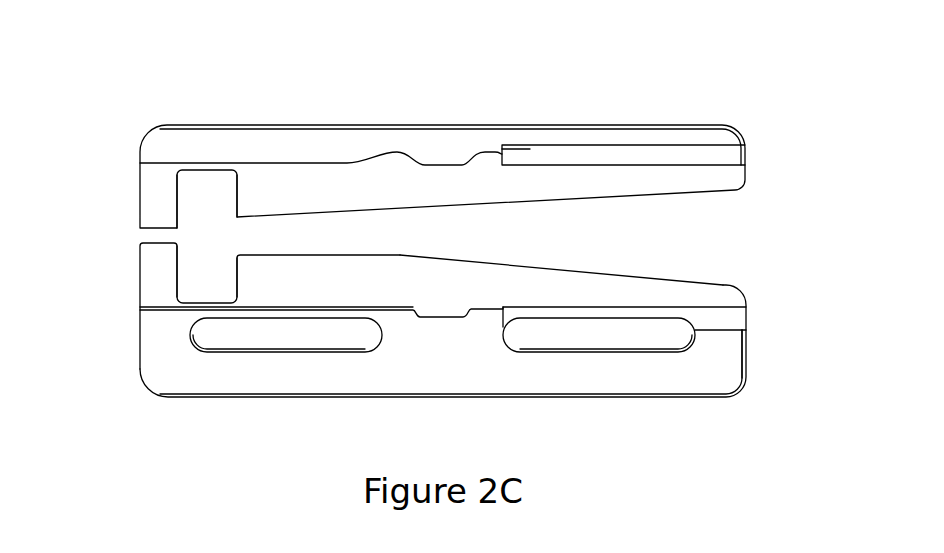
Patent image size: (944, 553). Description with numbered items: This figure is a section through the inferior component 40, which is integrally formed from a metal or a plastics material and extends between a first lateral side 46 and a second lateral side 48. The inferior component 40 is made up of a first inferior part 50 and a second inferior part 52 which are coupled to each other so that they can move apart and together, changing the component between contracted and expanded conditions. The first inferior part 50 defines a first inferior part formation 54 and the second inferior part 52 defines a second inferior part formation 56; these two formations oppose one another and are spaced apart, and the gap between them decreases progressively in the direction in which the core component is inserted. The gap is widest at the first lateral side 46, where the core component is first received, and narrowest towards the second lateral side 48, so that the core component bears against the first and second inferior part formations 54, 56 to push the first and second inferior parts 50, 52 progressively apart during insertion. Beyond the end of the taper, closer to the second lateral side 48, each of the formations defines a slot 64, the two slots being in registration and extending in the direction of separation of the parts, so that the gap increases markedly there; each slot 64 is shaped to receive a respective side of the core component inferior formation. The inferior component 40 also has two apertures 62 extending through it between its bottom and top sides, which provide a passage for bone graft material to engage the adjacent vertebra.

The inferior component 40 is at (762, 120).
The first lateral side 46 is at (748, 358).
The second lateral side 48 is at (140, 333).
The first inferior part 50 is at (477, 338).
The second inferior part 52 is at (520, 149).
The first inferior part formation 54 is at (447, 280).
The second inferior part formation 56 is at (635, 183).
The aperture 62 is at (263, 342).
The slot 64 is at (197, 190).